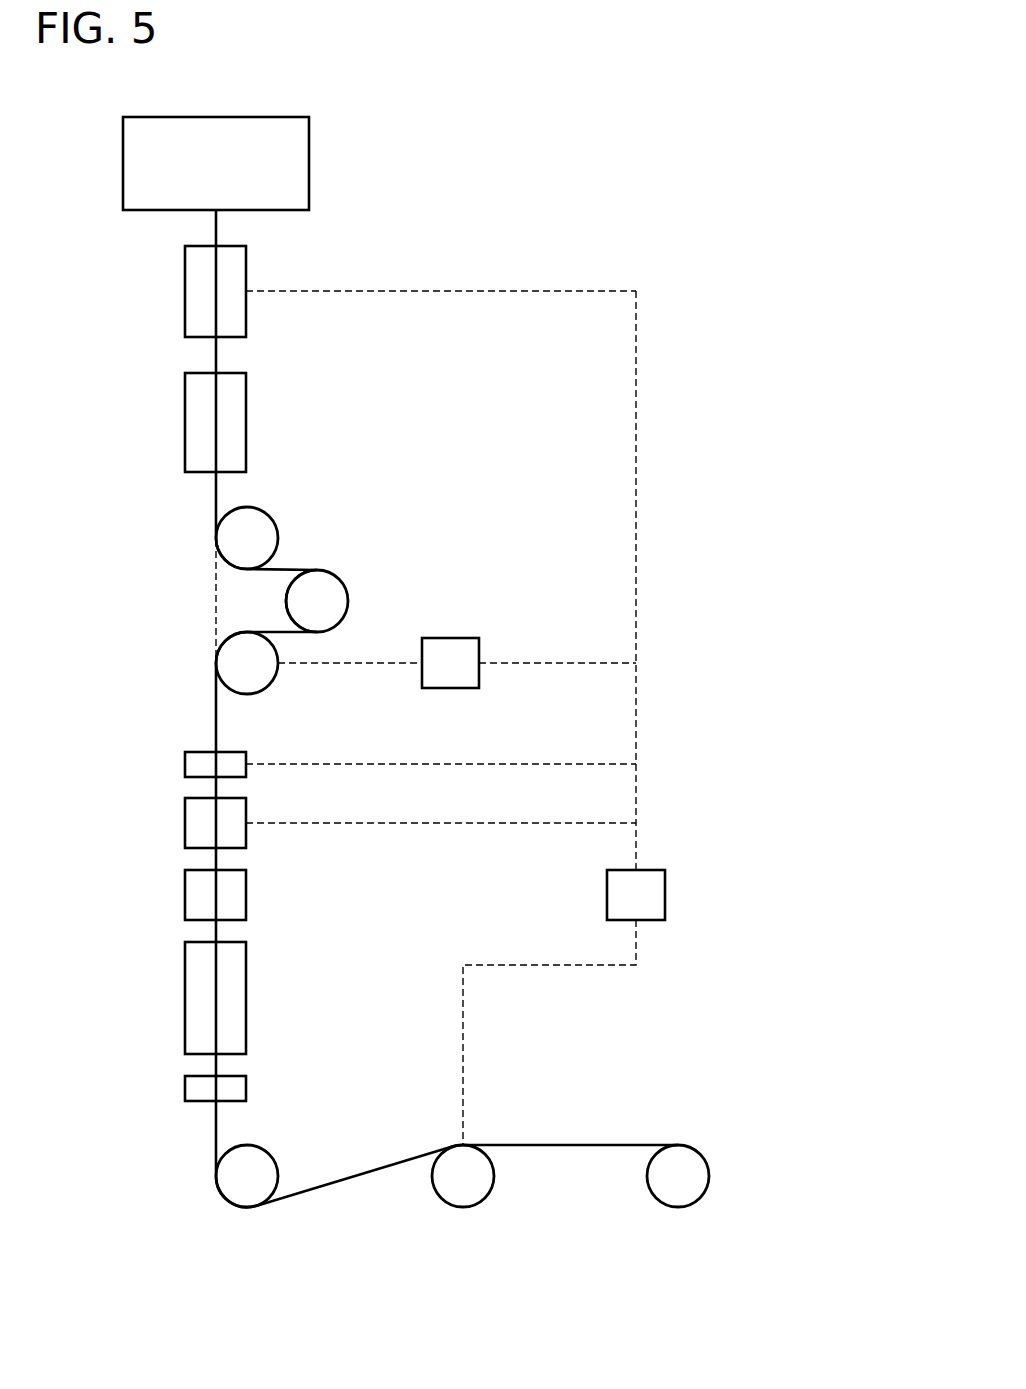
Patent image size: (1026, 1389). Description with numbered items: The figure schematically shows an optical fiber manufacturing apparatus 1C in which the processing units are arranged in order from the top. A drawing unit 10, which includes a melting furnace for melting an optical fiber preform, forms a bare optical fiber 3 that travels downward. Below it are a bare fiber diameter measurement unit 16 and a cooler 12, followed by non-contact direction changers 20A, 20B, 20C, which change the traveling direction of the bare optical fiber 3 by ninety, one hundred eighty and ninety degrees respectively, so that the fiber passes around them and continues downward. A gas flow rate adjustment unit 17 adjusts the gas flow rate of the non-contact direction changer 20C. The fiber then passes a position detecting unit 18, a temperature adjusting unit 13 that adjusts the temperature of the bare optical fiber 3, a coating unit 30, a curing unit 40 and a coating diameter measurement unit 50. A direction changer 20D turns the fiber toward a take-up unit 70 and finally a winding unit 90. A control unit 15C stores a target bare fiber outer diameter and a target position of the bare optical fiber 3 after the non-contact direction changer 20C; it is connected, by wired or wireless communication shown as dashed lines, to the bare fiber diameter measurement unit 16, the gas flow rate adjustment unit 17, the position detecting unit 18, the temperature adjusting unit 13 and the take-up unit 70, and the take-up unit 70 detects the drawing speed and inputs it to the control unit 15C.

The optical fiber manufacturing apparatus 1C is at (624, 172).
The bare optical fiber 3 is at (216, 226).
The drawing unit 10 is at (309, 160).
The bare fiber diameter measurement unit 16 is at (246, 260).
The cooler 12 is at (246, 425).
The non-contact direction changer 20A is at (278, 531).
The non-contact direction changer 20B is at (348, 594).
The non-contact direction changer 20C is at (272, 686).
The gas flow rate adjustment unit 17 is at (479, 645).
The position detecting unit 18 is at (185, 762).
The temperature adjusting unit 13 is at (185, 820).
The coating unit 30 is at (246, 895).
The curing unit 40 is at (246, 992).
The coating diameter measurement unit 50 is at (246, 1088).
The control unit 15C is at (665, 895).
The direction changer 20D is at (248, 1207).
The take-up unit 70 is at (464, 1207).
The winding unit 90 is at (679, 1207).